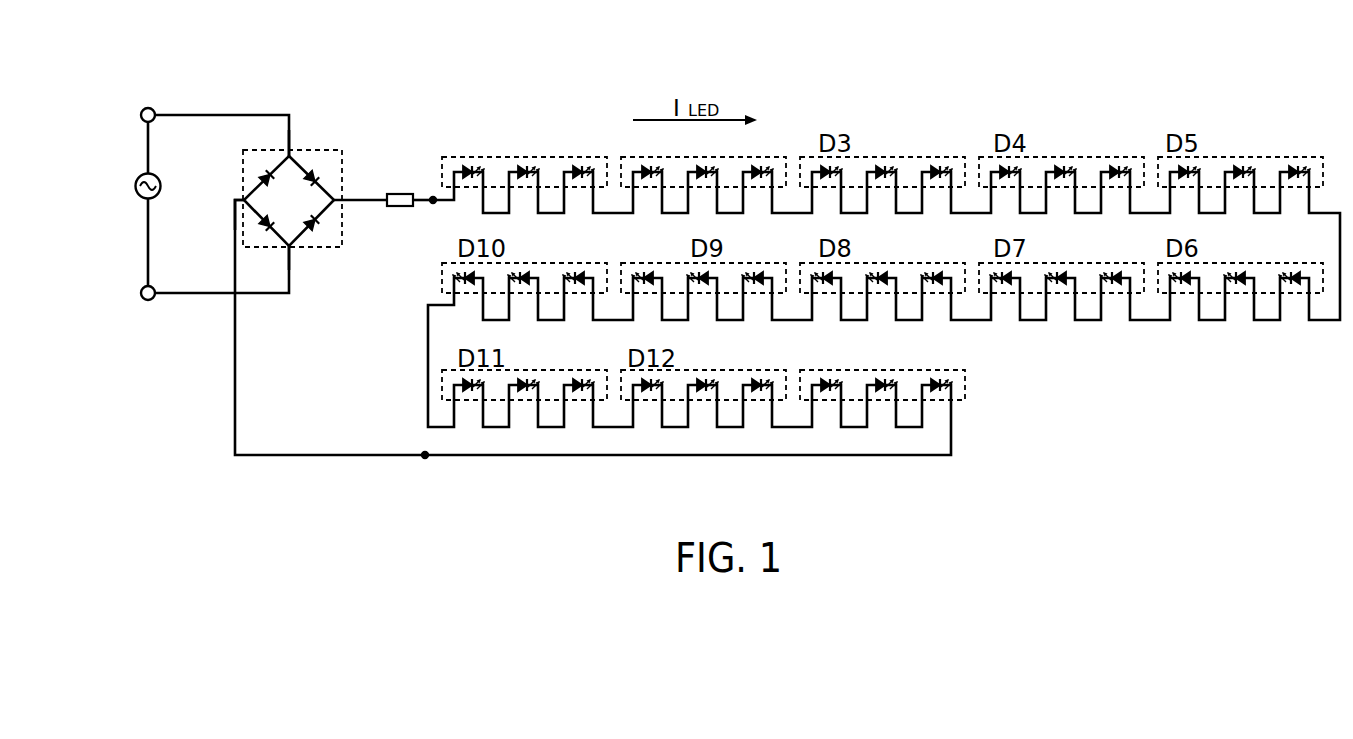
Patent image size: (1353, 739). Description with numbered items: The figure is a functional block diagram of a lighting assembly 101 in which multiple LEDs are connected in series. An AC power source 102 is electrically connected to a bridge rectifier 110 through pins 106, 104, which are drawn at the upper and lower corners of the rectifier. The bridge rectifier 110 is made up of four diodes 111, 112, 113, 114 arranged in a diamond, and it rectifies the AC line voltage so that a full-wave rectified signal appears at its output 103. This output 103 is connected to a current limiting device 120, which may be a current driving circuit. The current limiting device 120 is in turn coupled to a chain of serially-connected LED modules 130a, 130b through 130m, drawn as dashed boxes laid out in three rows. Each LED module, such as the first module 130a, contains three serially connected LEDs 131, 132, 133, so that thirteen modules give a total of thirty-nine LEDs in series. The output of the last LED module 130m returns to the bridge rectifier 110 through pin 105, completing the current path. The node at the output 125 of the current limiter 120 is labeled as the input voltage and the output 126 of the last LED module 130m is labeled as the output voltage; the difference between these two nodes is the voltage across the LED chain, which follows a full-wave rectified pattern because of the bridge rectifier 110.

The lighting assembly 101 is at (1052, 68).
The AC power source 102 is at (137, 181).
The output of the bridge rectifier 103 is at (345, 201).
The pin 104 is at (293, 243).
The pin 105 is at (243, 198).
The pin 106 is at (289, 140).
The bridge rectifier 110 is at (279, 181).
The diode 111 is at (318, 176).
The diode 112 is at (313, 222).
The diode 113 is at (266, 222).
The diode 114 is at (266, 178).
The current limiting device 120 is at (398, 193).
The output of current limiter 125 is at (431, 207).
The output of the LED module 126 is at (424, 454).
The LED module 130a is at (548, 126).
The LED module 130b is at (778, 157).
The LED module 130m is at (963, 384).
The LED 131 is at (466, 170).
The LED 132 is at (522, 170).
The LED 133 is at (576, 170).